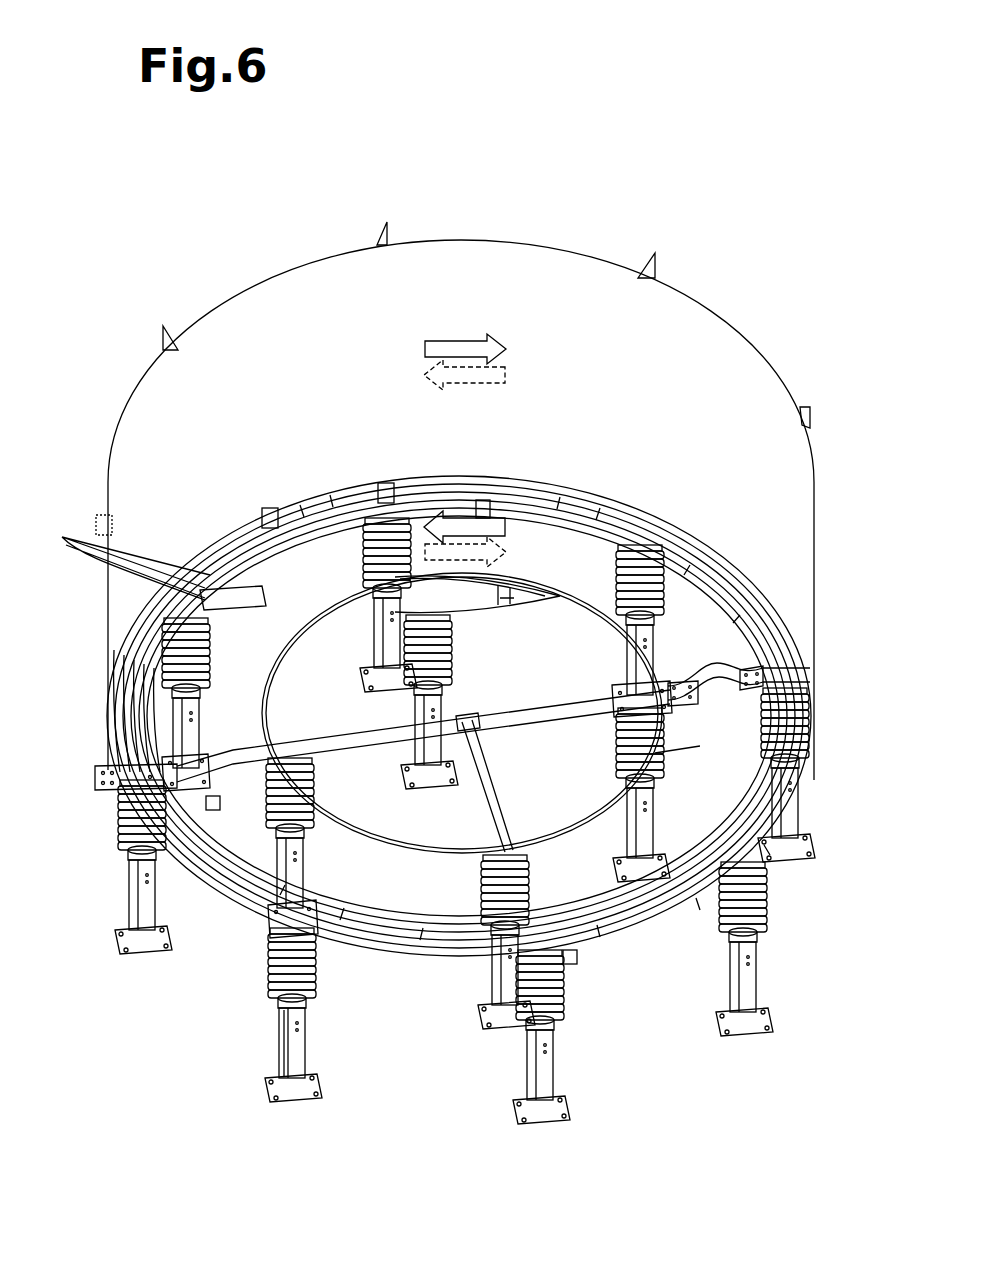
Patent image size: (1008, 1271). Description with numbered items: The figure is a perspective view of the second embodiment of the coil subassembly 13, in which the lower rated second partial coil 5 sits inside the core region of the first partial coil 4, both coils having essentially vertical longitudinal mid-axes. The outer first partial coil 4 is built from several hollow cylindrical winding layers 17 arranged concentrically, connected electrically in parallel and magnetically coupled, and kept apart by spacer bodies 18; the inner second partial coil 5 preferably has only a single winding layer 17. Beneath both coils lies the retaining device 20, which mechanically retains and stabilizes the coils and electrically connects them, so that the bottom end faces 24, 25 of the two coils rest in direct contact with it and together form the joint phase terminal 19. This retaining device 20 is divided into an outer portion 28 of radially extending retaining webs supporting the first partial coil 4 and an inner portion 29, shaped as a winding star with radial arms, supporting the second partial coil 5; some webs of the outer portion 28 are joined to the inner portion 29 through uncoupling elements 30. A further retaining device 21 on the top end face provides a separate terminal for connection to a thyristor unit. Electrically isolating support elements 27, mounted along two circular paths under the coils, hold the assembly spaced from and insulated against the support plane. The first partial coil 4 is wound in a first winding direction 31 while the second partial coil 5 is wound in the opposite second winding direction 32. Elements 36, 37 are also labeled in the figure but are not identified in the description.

The first partial coil 4 is at (900, 528).
The second partial coil 5 is at (247, 595).
The coil subassembly 13 is at (705, 175).
The winding layers 17 is at (66, 539).
The spacer bodies 18 is at (268, 518).
The joint phase terminal 19 is at (100, 800).
The retaining device 20 is at (527, 742).
The retaining device 21 is at (387, 222).
The bottom end face 24 is at (700, 762).
The bottom end face 25 is at (816, 728).
The electrically isolating support elements 27 is at (253, 1003).
The outer portion 28 is at (670, 510).
The inner portion 29 is at (448, 800).
The uncoupling elements 30 is at (418, 528).
The first winding direction 31 is at (465, 322).
The second winding direction 32 is at (478, 512).
The insulator 36 is at (257, 967).
The base plate 37 is at (280, 1060).